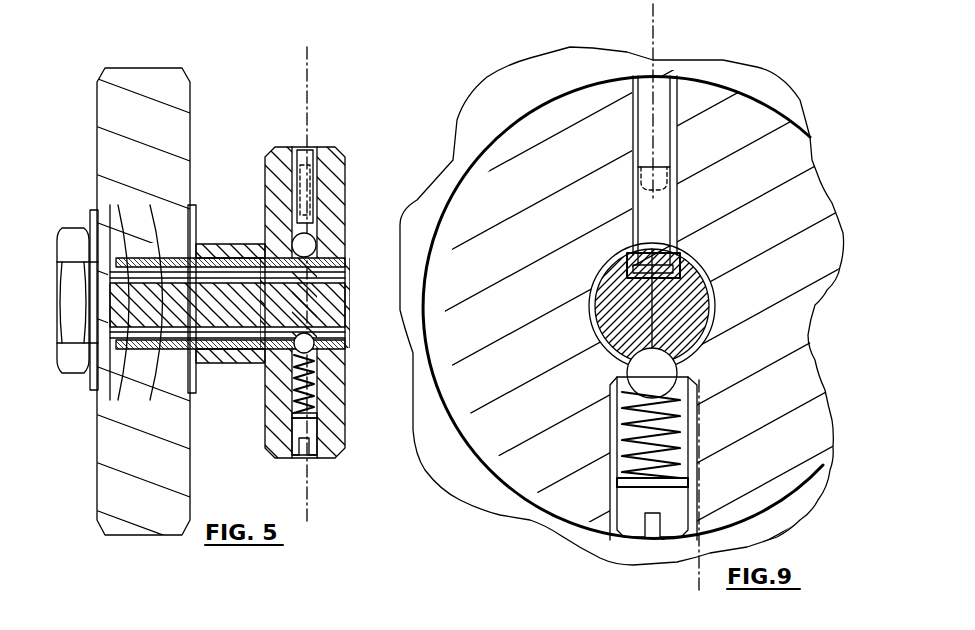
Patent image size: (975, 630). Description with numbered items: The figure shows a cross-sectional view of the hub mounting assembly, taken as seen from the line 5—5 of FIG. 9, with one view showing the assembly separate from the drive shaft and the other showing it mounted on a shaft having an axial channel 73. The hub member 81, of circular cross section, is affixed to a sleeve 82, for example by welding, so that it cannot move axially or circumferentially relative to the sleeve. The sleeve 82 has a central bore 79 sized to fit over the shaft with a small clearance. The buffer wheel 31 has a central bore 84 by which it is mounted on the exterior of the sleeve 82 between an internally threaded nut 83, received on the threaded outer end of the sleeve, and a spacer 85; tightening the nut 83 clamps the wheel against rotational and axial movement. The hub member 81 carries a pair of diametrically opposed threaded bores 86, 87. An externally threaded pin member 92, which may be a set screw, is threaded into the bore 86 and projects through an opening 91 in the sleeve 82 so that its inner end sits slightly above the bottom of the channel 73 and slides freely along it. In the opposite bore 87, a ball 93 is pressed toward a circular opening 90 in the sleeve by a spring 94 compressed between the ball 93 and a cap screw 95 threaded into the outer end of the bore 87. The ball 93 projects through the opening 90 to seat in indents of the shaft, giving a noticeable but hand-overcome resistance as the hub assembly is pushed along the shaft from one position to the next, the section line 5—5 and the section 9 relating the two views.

In FIG. 5, the buffer wheel 31 is at (172, 118).
In FIG. 9, the buffer wheel 31 is at (532, 78).
In FIG. 5, the section line 9- 9 is at (307, 52).
In FIG. 9, the section line 9- 9 is at (720, 220).
In FIG. 9, the section line 5- 5 is at (665, 12).
In FIG. 9, the channel 73 is at (800, 3).
In FIG. 5, the central bore 79 is at (335, 286).
In FIG. 9, the central bore 79 is at (596, 345).
In FIG. 5, the hub member 81 is at (347, 160).
In FIG. 9, the hub member 81 is at (807, 243).
In FIG. 5, the sleeve 82 is at (215, 258).
In FIG. 9, the sleeve 82 is at (717, 315).
In FIG. 5, the nut 83 is at (78, 378).
In FIG. 5, the central bore 84 is at (157, 257).
In FIG. 5, the spacer 85 is at (222, 350).
In FIG. 5, the threaded bore 86 is at (302, 160).
In FIG. 9, the threaded bore 86 is at (654, 178).
In FIG. 5, the threaded bore 87 is at (302, 470).
In FIG. 9, the threaded bore 87 is at (697, 398).
In FIG. 5, the circular opening 90 is at (345, 320).
In FIG. 9, the circular opening 90 is at (677, 385).
In FIG. 5, the opening 91 is at (303, 250).
In FIG. 9, the pin member 92 is at (767, 132).
In FIG. 5, the ball 93 is at (292, 398).
In FIG. 9, the ball 93 is at (612, 405).
In FIG. 9, the spring 94 is at (770, 505).
In FIG. 9, the cap screw 95 is at (622, 537).